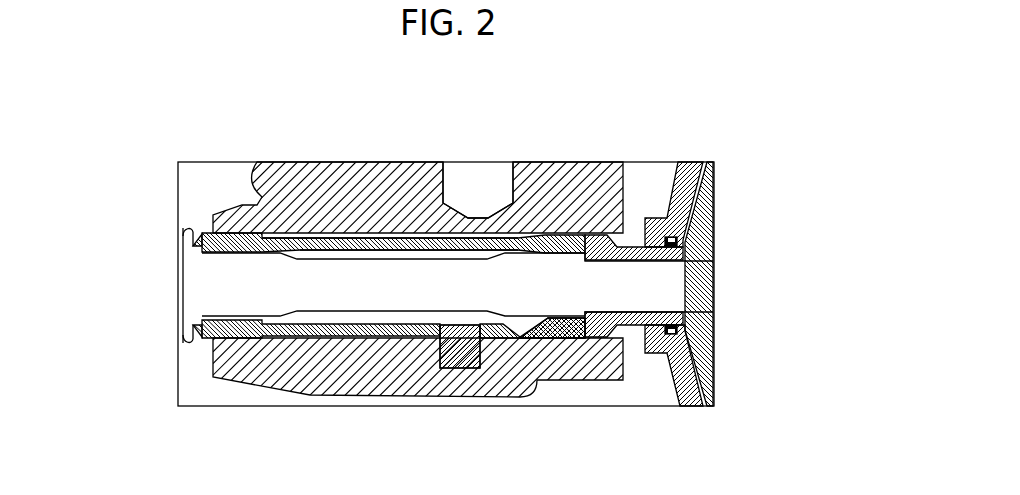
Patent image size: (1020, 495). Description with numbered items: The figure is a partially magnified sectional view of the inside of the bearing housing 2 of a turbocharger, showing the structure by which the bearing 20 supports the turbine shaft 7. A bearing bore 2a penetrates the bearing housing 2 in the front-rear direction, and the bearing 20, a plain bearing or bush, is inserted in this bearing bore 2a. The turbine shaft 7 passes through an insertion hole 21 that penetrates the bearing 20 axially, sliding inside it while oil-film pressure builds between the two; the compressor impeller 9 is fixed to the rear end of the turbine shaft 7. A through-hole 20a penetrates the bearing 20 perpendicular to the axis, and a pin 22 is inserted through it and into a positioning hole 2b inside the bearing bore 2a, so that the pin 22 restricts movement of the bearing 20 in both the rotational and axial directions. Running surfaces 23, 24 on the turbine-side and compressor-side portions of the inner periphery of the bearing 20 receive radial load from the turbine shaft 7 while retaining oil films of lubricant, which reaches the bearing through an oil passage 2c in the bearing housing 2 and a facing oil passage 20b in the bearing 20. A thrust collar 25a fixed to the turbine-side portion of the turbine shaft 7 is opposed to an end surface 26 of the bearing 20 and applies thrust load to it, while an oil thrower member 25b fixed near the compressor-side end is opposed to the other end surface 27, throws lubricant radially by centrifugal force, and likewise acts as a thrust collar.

The bearing housing 2 is at (578, 162).
The bearing bore 2a is at (307, 338).
The positioning hole 2b is at (440, 368).
The oil passage 2c is at (478, 163).
The turbine shaft 7 is at (365, 262).
The compressor impeller 9 is at (713, 238).
The bearing 20 is at (333, 238).
The through-hole 20a is at (480, 338).
The oil passage 20b is at (437, 240).
The insertion hole 21 is at (288, 240).
The pin 22 is at (458, 368).
The running surface 23 is at (205, 238).
The running surface 24 is at (545, 335).
The thrust collar 25a is at (190, 228).
The oil thrower member 25b is at (635, 245).
The end surface 26 is at (202, 338).
The end surface 27 is at (583, 338).